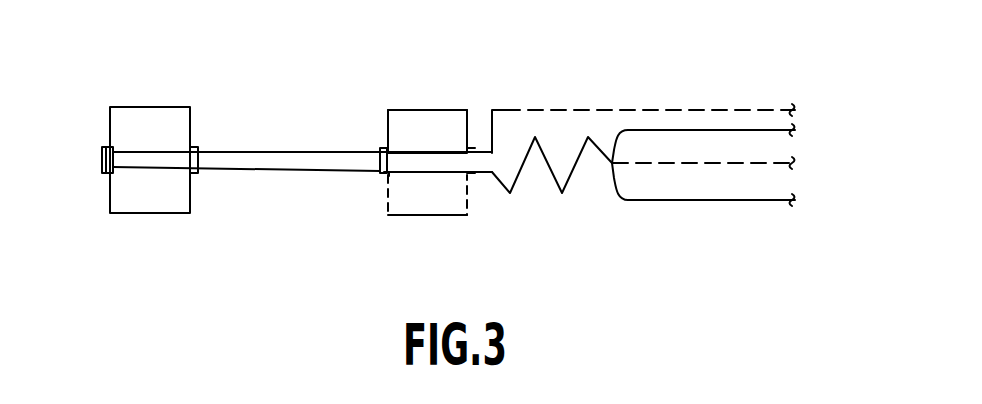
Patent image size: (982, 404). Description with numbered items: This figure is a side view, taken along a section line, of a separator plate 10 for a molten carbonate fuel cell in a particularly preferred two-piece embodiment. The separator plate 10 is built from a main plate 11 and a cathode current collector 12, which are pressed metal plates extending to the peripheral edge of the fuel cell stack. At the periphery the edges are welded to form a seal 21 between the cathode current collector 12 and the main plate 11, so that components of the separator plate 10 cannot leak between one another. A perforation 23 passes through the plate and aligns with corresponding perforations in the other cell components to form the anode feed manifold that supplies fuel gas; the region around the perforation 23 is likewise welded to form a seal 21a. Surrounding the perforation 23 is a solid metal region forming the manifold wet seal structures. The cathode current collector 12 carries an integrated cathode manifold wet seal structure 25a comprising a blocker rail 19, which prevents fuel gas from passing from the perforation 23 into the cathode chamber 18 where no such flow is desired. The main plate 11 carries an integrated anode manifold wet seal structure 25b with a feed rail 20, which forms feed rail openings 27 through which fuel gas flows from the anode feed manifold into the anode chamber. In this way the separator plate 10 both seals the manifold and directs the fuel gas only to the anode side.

The separator plate 10 is at (643, 131).
The main plate 11 is at (743, 200).
The cathode current collector 12 is at (632, 110).
The cathode chamber 18 is at (522, 144).
The blocker rail 19 is at (427, 110).
The feed rail 20 is at (435, 215).
The seal 21 is at (101, 163).
The seal 21a is at (197, 155).
The perforation 23 is at (268, 190).
The cathode manifold wet seal structure 25a is at (150, 107).
The anode manifold wet seal structure 25b is at (135, 213).
The feed rail openings 27 is at (385, 192).